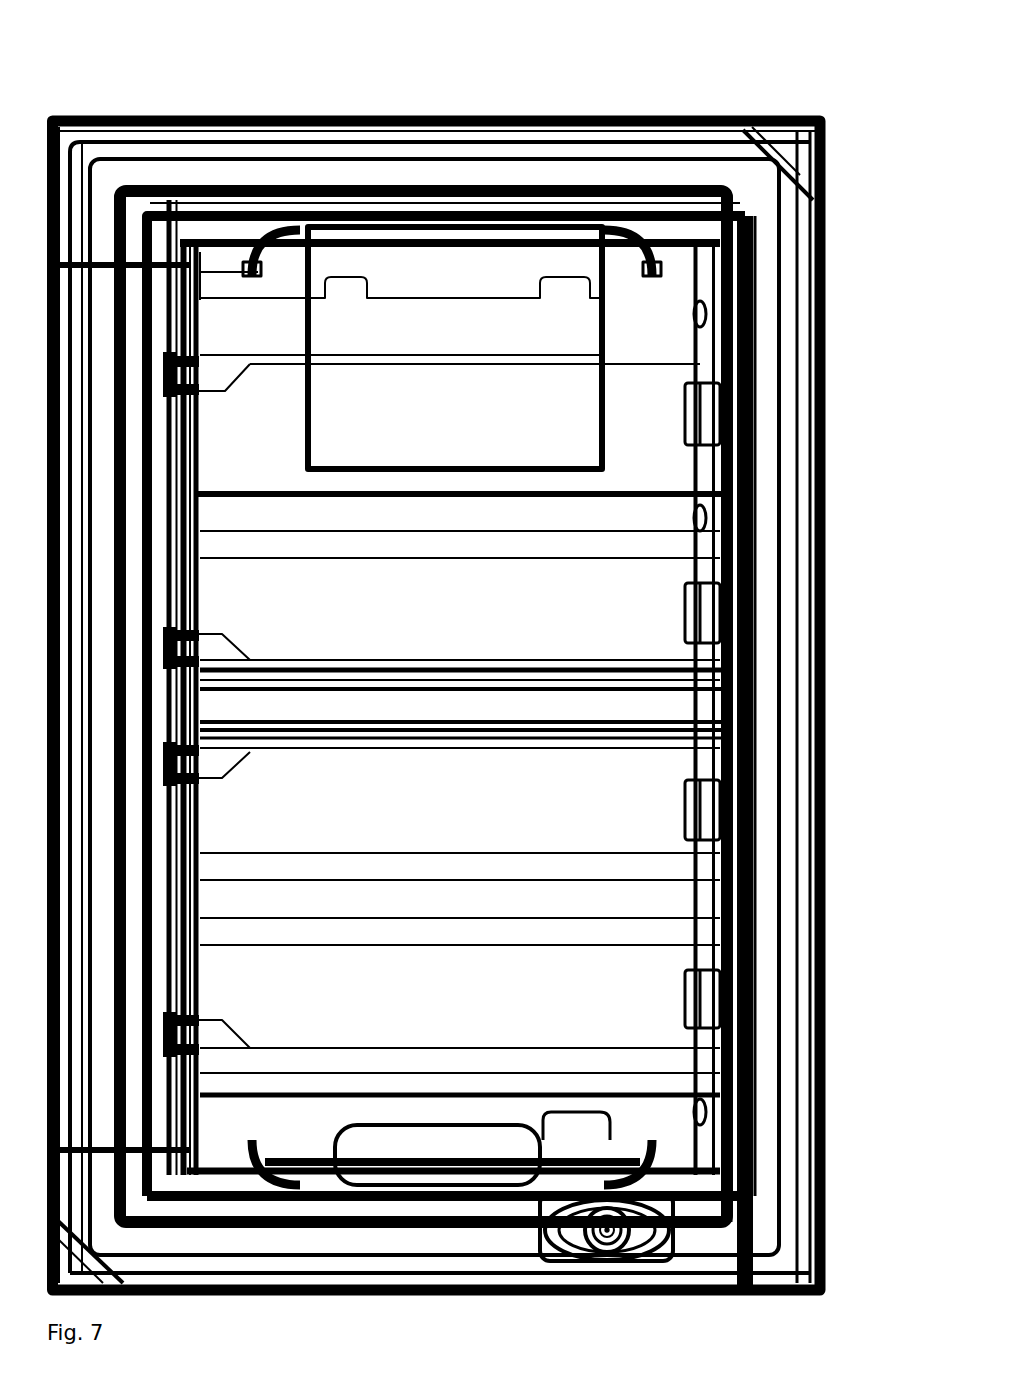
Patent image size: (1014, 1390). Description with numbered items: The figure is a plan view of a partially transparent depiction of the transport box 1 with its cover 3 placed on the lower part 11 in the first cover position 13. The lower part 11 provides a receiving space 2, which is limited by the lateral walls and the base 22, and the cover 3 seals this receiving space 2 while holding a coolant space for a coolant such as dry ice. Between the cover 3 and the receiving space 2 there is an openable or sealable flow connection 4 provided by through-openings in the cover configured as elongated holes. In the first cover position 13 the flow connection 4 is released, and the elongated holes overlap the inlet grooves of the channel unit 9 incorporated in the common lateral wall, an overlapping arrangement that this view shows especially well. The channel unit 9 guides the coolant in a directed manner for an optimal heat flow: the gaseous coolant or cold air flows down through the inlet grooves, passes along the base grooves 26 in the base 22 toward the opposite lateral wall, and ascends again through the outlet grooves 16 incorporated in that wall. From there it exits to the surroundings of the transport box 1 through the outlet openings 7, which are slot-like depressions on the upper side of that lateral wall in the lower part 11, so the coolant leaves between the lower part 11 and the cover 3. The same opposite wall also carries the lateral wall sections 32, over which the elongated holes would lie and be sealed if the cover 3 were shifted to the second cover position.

The transport box 1 is at (108, 45).
The receiving space 2 is at (450, 272).
The cover 3 is at (348, 175).
The flow connection 4 is at (675, 312).
The outlet opening 7 is at (100, 258).
The channel unit 9 is at (493, 355).
The lower part 11 is at (190, 115).
The first cover position 13 is at (222, 72).
The outlet groove 16 is at (218, 350).
The base 22 is at (570, 830).
The base groove 26 is at (535, 315).
The lateral wall section 32 is at (205, 425).